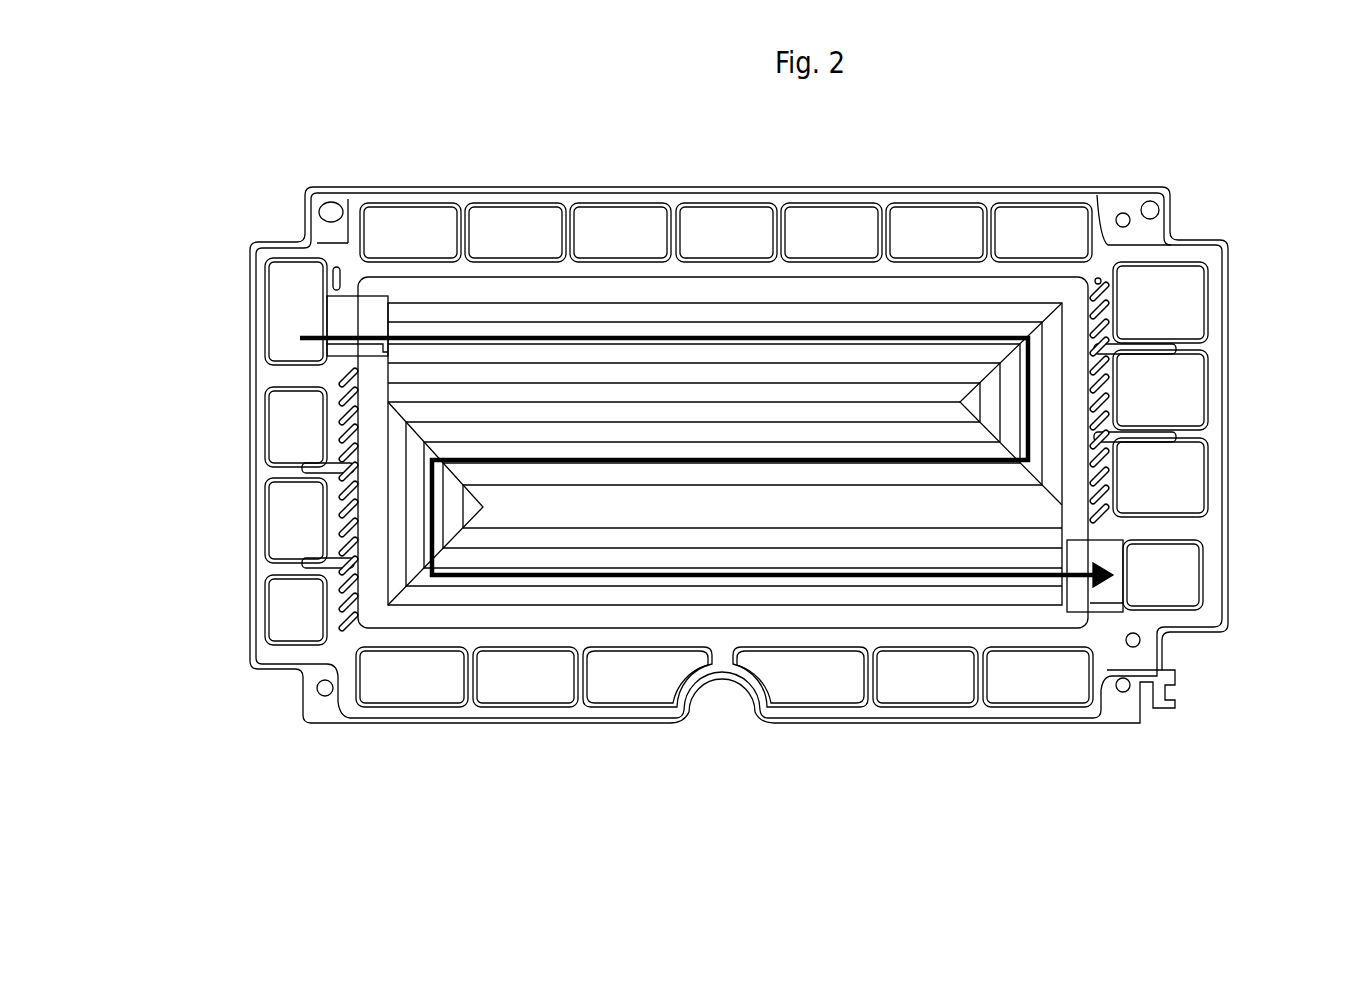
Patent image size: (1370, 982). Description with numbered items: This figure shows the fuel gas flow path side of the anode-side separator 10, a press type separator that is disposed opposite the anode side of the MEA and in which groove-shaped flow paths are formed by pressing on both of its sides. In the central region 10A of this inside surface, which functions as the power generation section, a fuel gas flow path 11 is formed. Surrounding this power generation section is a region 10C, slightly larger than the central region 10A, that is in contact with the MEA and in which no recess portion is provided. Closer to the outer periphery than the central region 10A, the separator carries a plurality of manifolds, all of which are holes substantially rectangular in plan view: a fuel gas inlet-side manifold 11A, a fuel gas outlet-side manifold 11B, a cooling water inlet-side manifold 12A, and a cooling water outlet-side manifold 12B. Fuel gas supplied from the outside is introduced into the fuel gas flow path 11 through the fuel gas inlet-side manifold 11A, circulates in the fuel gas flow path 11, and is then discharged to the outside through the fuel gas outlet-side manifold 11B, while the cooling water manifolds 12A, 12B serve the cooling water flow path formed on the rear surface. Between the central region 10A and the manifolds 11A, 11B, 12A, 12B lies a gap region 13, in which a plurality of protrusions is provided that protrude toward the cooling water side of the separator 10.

The anode-side separator 10 is at (966, 164).
The central region 10A is at (910, 604).
The region in contact with the MEA 10C is at (636, 616).
The fuel gas flow path 11 is at (725, 607).
The fuel gas inlet-side manifold 11A is at (288, 265).
The fuel gas outlet-side manifold 11B is at (1207, 573).
The cooling water inlet-side manifold 12A is at (1206, 478).
The cooling water outlet-side manifold 12B is at (265, 613).
The gap region 13 is at (1104, 522).